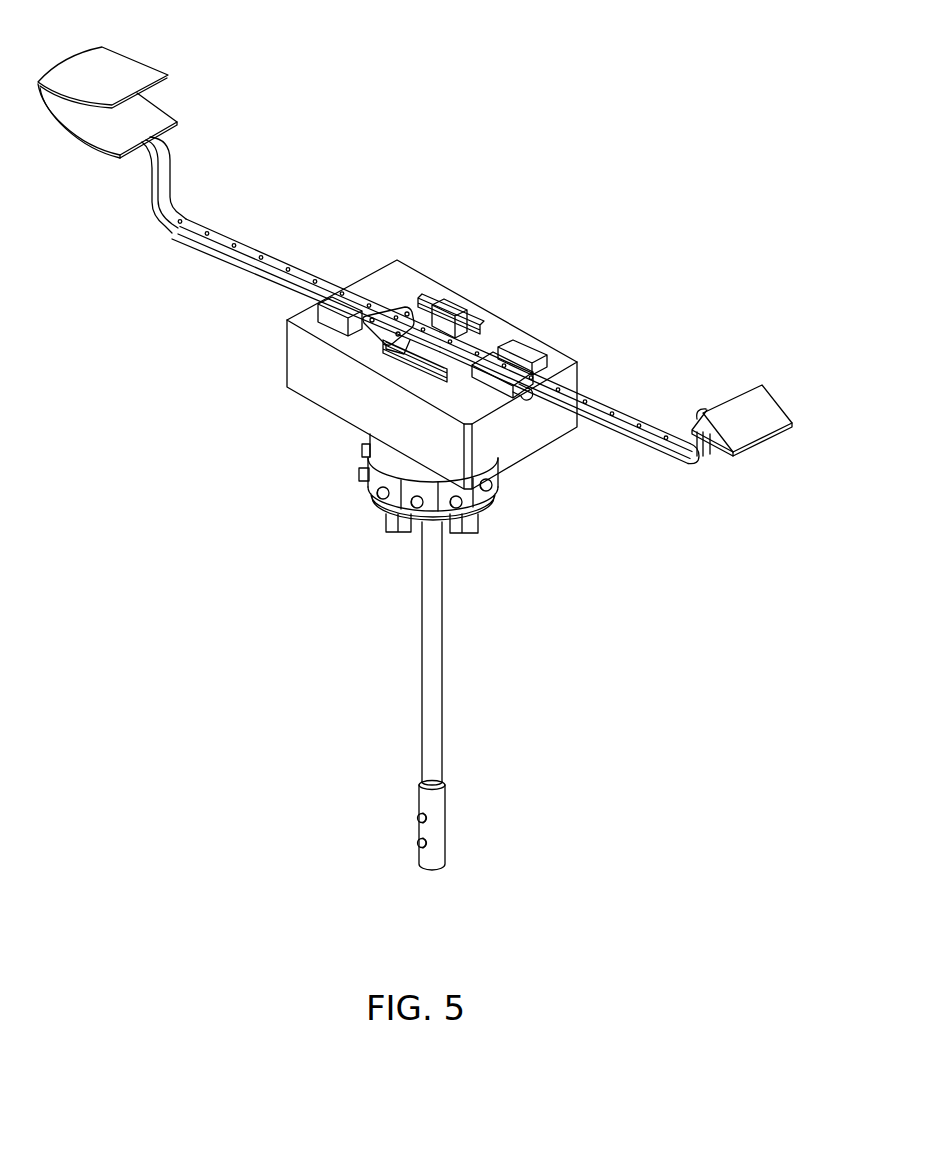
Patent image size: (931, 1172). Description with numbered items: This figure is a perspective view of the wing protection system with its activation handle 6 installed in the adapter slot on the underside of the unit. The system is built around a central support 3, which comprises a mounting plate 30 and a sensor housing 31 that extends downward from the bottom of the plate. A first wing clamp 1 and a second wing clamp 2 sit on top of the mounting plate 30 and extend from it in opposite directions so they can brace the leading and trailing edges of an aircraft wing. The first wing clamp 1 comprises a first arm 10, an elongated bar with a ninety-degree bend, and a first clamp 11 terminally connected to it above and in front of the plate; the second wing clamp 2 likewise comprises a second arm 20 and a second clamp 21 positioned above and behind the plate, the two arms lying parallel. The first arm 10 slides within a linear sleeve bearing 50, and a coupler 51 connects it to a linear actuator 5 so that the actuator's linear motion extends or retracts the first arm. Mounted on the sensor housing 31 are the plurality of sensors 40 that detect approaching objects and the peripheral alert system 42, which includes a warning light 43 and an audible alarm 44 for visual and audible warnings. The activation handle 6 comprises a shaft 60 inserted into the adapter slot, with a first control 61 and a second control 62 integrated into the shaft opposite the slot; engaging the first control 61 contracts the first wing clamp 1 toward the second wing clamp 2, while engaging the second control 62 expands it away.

The first wing clamp 1 is at (372, 72).
The second wing clamp 2 is at (680, 208).
The central support 3 is at (517, 626).
The linear actuator 5 is at (497, 387).
The activation handle 6 is at (435, 909).
The first arm 10 is at (243, 262).
The first clamp 11 is at (128, 63).
The second arm 20 is at (751, 401).
The second clamp 21 is at (643, 436).
The mounting plate 30 is at (410, 272).
The sensor housing 31 is at (375, 442).
The plurality of sensors 40 is at (378, 496).
The peripheral alert system 42 is at (250, 517).
The warning light 43 is at (465, 530).
The audible alarm 44 is at (397, 529).
The linear sleeve bearing 50 is at (397, 353).
The coupler 51 is at (390, 315).
The shaft 60 is at (437, 726).
The first control 61 is at (418, 815).
The second control 62 is at (418, 845).